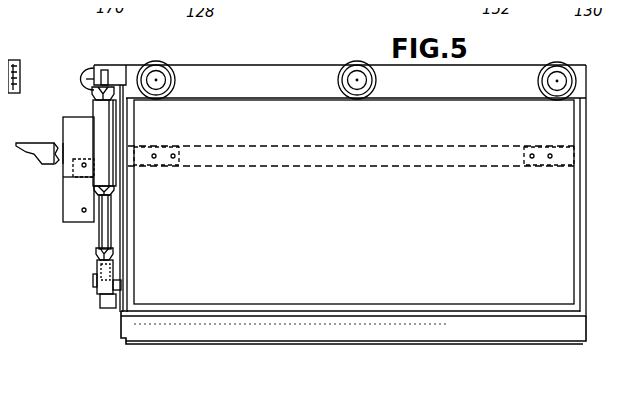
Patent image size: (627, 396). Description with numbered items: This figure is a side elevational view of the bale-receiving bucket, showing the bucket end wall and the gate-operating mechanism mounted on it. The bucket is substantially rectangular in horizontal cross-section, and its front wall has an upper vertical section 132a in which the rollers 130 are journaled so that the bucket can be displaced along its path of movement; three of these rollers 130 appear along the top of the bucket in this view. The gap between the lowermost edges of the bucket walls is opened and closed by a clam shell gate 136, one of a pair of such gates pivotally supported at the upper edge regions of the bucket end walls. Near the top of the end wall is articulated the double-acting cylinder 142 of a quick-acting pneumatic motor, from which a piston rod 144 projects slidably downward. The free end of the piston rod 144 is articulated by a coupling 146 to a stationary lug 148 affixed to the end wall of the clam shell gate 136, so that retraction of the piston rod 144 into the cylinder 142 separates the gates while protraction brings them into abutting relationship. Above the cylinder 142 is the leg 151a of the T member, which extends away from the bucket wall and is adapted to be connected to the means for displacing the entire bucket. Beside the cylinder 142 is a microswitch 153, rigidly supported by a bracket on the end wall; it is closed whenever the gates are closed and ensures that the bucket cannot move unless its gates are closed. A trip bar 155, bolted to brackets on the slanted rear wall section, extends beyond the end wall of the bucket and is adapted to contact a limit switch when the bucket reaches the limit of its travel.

The roller 130 is at (166, 57).
The clam shell gate 136 is at (236, 322).
The double-acting cylinder 142 is at (98, 123).
The piston rod 144 is at (94, 226).
The coupling 146 is at (88, 260).
The stationary lug 148 is at (98, 301).
The leg of T member 151a is at (77, 57).
The microswitch 153 is at (68, 104).
The trip bar 155 is at (35, 153).
The vertical section of front wall 132a is at (2, 94).